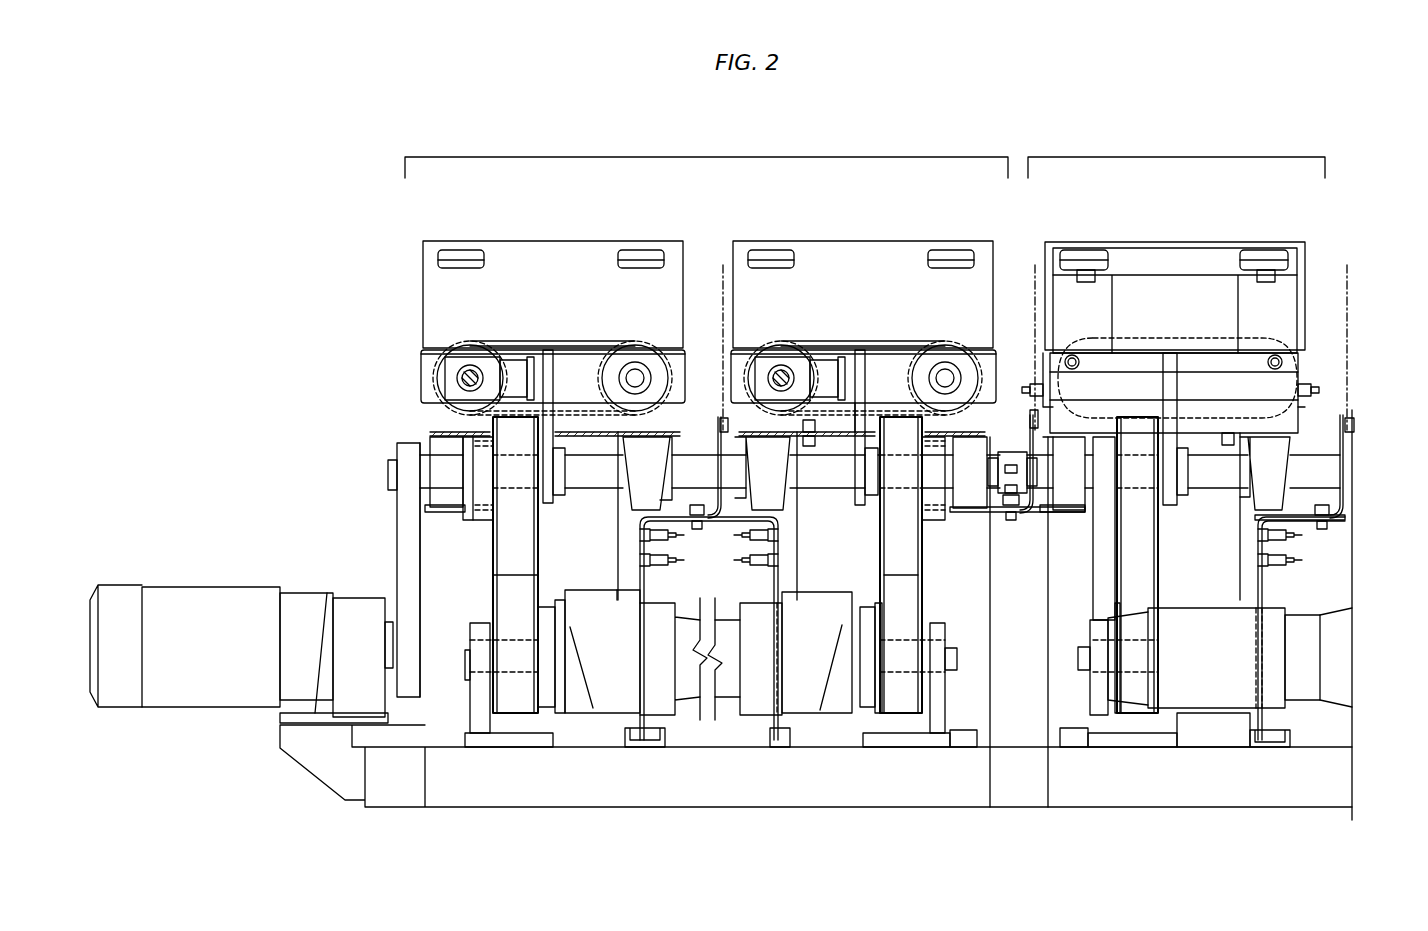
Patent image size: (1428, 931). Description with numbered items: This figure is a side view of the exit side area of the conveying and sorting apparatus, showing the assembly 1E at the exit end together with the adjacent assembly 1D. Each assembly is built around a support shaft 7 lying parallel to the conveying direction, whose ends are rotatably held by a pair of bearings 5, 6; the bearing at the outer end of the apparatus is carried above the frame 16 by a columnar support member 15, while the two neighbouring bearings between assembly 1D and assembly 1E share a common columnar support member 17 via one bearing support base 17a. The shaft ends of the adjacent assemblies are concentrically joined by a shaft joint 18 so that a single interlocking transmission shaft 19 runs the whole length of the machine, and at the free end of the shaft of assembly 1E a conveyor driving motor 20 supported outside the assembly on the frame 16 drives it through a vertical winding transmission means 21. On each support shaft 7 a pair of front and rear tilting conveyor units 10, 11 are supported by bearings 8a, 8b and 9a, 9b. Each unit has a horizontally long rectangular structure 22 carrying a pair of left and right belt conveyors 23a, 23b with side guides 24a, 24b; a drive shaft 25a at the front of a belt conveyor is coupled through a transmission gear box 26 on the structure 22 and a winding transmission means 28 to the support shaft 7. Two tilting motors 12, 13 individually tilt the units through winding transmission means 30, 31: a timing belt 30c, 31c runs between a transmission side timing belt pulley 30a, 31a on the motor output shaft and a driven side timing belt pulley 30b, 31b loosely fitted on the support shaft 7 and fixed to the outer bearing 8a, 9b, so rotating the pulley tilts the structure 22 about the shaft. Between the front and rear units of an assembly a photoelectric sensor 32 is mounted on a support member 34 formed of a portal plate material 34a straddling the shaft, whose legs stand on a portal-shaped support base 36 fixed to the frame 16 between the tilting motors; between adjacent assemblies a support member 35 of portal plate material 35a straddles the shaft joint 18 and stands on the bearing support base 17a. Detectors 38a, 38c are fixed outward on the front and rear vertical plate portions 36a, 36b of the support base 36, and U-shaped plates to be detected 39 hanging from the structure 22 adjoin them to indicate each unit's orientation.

The assembly 1E is at (706, 154).
The assembly 1D is at (1176, 154).
The bearing 5 is at (967, 478).
The bearing 6 is at (447, 445).
The support shaft 7 is at (583, 465).
The bearing 8a is at (930, 472).
The bearing 8b is at (772, 472).
The bearing 9a is at (643, 467).
The bearing 9b is at (480, 477).
The tilting conveyor unit 10 is at (820, 233).
The tilting conveyor unit 11 is at (492, 233).
The tilting motor 12 is at (1046, 669).
The tilting motor 13 is at (602, 651).
The columnar support member 15 is at (440, 553).
The frame 16 is at (709, 691).
The columnar support member 17 is at (1171, 615).
The bearing support base 17a is at (997, 512).
The shaft joint 18 is at (1008, 460).
The interlocking transmission shaft 19 is at (1314, 393).
The conveyor driving motor 20 is at (241, 651).
The vertical winding transmission means 21 is at (396, 518).
The structure 22 is at (418, 388).
The belt conveyor 23a is at (1257, 333).
The belt conveyor 23b is at (517, 336).
The side guide 24a is at (1187, 285).
The side guide 24b is at (557, 268).
The drive shaft 25a is at (460, 378).
The transmission gear box 26 is at (456, 357).
The winding transmission means 28 is at (548, 370).
The winding transmission means 30 is at (899, 697).
The transmission side timing belt pulley 30a is at (877, 683).
The driven side timing belt pulley 30b is at (873, 427).
The timing belt 30c is at (908, 582).
The winding transmission means 31 is at (517, 697).
The transmission side timing belt pulley 31a is at (493, 685).
The driven side timing belt pulley 31b is at (480, 500).
The timing belt 31c is at (518, 575).
The photoelectric sensor 32 is at (728, 418).
The support member 34 is at (714, 473).
The portal plate material 34a is at (716, 522).
The support member 35 is at (1010, 492).
The portal plate material 35a is at (1063, 445).
The support base 36 is at (750, 512).
The vertical plate portion 36a is at (777, 667).
The vertical plate portion 36b is at (637, 655).
The detector 38a is at (627, 562).
The detector 38c is at (627, 533).
The plate to be detected 39 is at (617, 515).